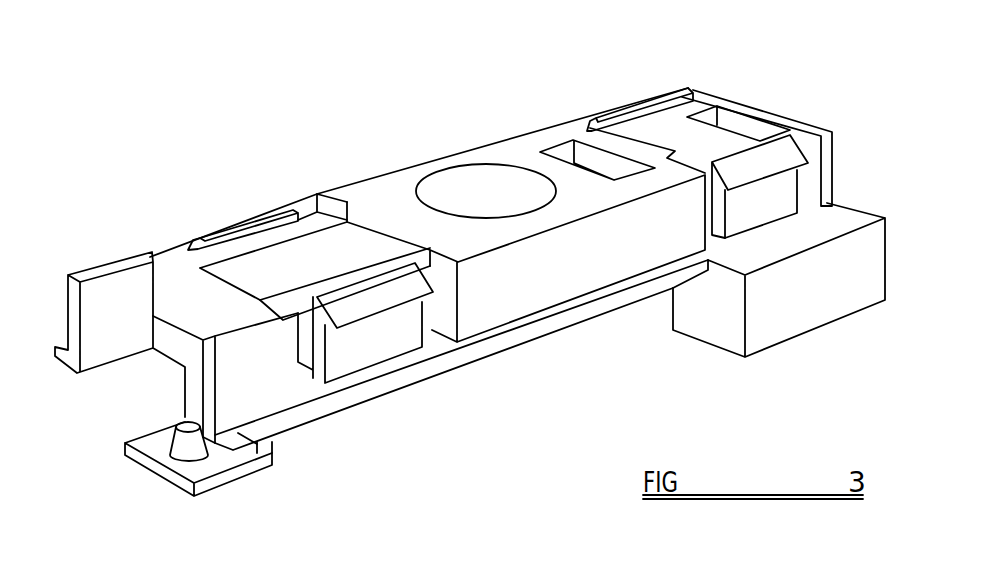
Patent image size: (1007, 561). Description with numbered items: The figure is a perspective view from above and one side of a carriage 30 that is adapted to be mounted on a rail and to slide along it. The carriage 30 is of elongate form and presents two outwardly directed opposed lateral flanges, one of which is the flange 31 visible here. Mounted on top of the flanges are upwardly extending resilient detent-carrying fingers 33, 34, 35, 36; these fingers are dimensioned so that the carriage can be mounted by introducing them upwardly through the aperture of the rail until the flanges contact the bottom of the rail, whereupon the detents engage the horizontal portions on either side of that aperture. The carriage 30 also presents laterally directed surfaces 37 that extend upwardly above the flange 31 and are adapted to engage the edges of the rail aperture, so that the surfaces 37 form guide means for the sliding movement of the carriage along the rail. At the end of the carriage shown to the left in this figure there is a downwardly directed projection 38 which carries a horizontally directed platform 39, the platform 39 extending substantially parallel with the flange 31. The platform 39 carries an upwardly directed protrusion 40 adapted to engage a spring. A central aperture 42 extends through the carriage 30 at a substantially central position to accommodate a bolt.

The carriage 30 is at (753, 85).
The lateral flange 31 is at (510, 343).
The resilient detent-carrying finger 33 is at (362, 305).
The resilient detent-carrying finger 34 is at (760, 170).
The resilient detent-carrying finger 35 is at (607, 113).
The resilient detent-carrying finger 36 is at (228, 222).
The laterally directed surface 37 is at (236, 368).
The downwardly directed projection 38 is at (273, 442).
The platform 39 is at (217, 482).
The upwardly directed protrusion 40 is at (177, 422).
The central aperture 42 is at (467, 207).